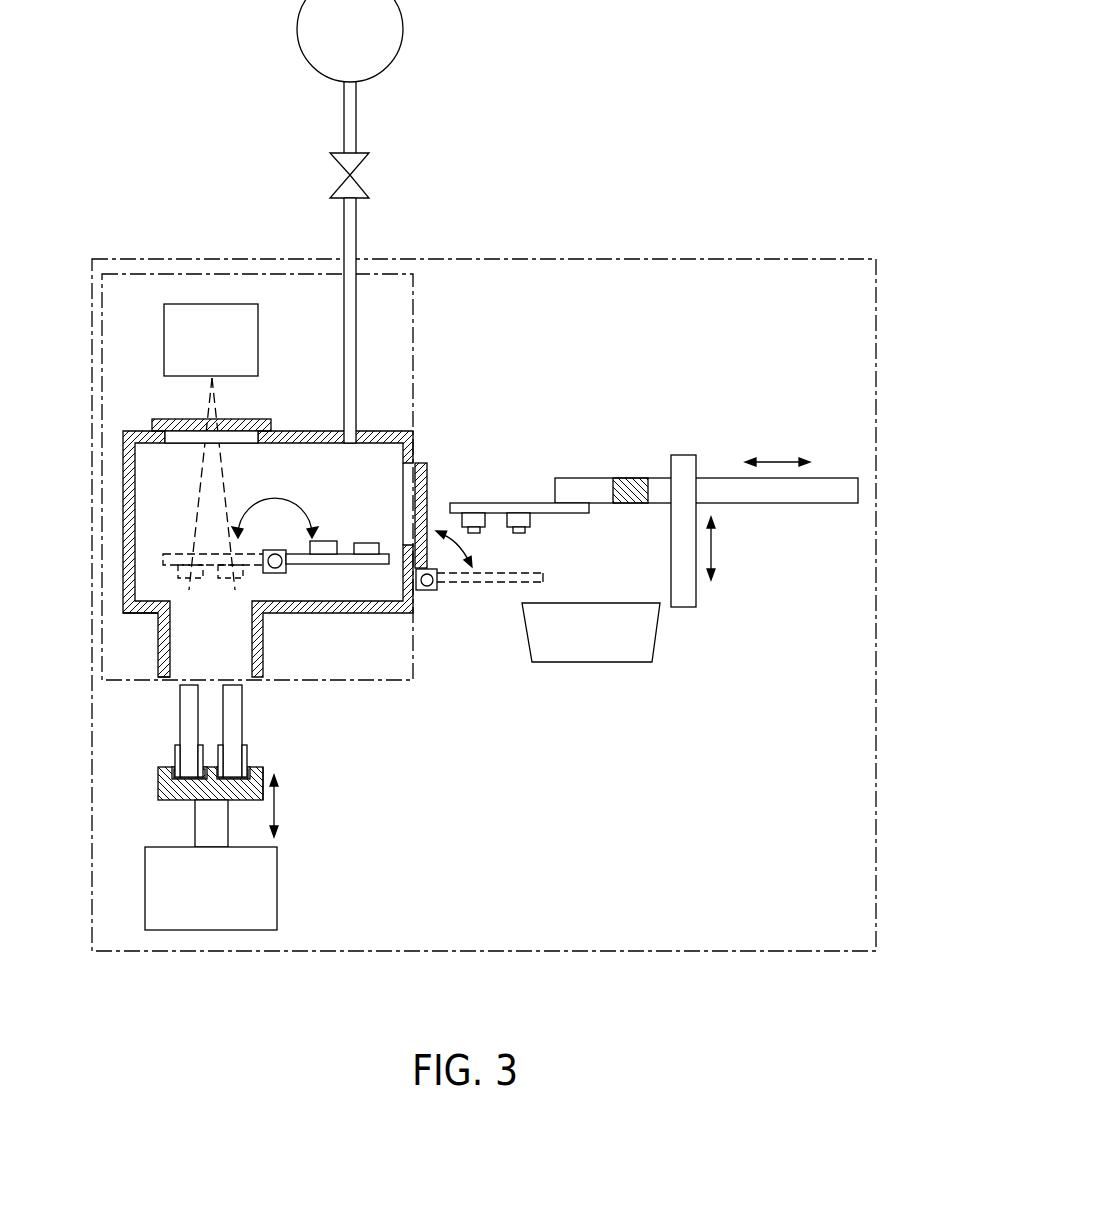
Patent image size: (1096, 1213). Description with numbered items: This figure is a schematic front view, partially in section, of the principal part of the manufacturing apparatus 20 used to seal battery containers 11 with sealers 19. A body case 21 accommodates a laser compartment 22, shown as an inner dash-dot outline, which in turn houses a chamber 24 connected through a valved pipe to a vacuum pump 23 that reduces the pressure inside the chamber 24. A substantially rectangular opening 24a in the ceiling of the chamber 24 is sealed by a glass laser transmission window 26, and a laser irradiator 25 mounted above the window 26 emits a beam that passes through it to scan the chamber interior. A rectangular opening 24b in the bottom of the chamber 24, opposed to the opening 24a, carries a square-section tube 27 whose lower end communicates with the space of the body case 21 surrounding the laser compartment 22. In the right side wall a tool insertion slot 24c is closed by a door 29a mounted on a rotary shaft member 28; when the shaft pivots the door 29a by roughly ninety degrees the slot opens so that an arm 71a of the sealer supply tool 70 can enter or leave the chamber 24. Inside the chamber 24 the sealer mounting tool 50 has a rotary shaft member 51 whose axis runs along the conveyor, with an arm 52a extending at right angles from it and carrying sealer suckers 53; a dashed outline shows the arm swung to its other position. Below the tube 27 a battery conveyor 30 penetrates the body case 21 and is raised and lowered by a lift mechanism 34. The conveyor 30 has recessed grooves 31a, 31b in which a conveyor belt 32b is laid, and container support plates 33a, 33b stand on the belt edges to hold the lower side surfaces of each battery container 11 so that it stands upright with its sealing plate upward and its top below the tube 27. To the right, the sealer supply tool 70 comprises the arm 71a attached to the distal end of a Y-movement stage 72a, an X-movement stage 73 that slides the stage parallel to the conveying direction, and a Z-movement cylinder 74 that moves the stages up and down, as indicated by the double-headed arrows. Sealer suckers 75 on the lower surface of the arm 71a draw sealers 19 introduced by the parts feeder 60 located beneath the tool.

The battery container 11 is at (179, 700).
The sealer 19 is at (472, 534).
The manufacturing apparatus 20 is at (746, 219).
The body case 21 is at (843, 258).
The laser compartment 22 is at (415, 302).
The vacuum pump 23 is at (403, 30).
The chamber 24 is at (383, 431).
The opening 24a is at (248, 444).
The opening 24b is at (158, 622).
The tool insertion slot 24c is at (413, 468).
The laser irradiator 25 is at (258, 335).
The laser transmission window 26 is at (260, 419).
The tube 27 is at (263, 658).
The rotary shaft member 28 is at (427, 591).
The door 29a is at (430, 463).
The battery conveyor 30 is at (181, 801).
The recessed groove 31a is at (165, 790).
The recessed groove 31b is at (270, 790).
The conveyor belt 32b is at (188, 776).
The container support plate 33a is at (177, 752).
The container support plate 33b is at (200, 750).
The lift mechanism 34 is at (278, 885).
The sealer mounting tool 50 is at (306, 573).
The rotary shaft member 51 is at (277, 550).
The arm 52a is at (345, 565).
The sealer sucker 53 is at (327, 541).
The parts feeder 60 is at (625, 663).
The sealer supply tool 70 is at (604, 433).
The arm 71a is at (541, 503).
The Y-movement stage 72a is at (828, 504).
The X-movement stage 73 is at (628, 504).
The Z-movement cylinder 74 is at (697, 589).
The sealer sucker 75 is at (473, 516).